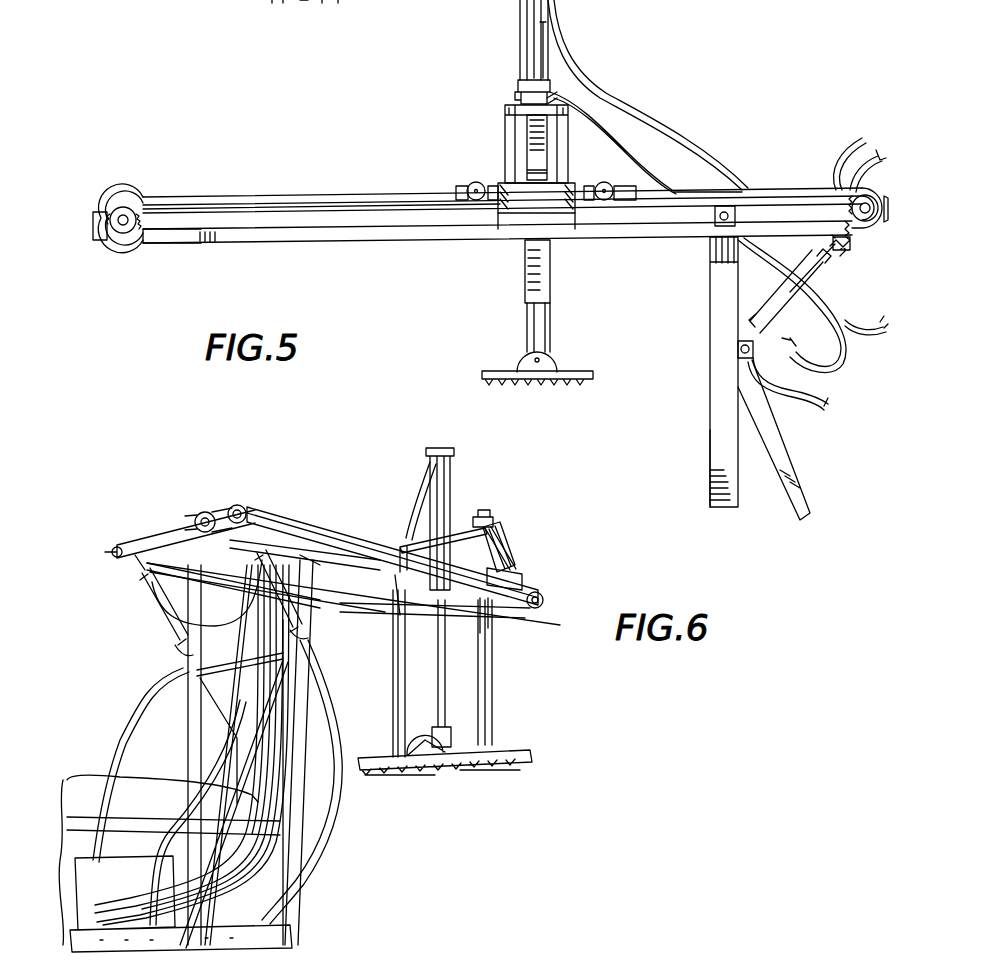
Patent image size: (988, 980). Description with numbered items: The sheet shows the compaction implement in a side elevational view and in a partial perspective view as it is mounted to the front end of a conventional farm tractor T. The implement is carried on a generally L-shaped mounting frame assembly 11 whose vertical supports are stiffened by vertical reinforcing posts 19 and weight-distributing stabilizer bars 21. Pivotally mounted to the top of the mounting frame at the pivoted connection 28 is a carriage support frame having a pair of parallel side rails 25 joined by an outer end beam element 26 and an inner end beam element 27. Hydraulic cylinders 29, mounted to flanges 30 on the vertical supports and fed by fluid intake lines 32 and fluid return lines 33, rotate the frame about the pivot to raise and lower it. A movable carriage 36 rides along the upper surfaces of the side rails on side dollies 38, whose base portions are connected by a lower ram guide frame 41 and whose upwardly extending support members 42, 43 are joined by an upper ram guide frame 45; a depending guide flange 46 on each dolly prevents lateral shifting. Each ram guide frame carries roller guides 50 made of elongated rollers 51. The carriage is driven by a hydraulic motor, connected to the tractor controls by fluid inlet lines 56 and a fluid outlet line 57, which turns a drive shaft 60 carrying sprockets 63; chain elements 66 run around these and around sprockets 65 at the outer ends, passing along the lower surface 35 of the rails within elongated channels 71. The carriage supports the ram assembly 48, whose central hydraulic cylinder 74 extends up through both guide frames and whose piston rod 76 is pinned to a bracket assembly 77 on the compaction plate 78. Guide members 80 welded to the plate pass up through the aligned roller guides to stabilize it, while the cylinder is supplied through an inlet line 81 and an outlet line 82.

In FIG. 5, the mounting frame assembly 11 is at (705, 465).
In FIG. 5, the vertical reinforcing posts 19 is at (720, 399).
In FIG. 5, the stabilizer bars 21 is at (801, 496).
In FIG. 5, the side rails 25 is at (208, 215).
In FIG. 6, the side rails 25 is at (322, 528).
In FIG. 6, the outer end beam element 26 is at (506, 614).
In FIG. 6, the inner end beam element 27 is at (201, 524).
In FIG. 5, the pivoted connection 28 is at (728, 211).
In FIG. 5, the hydraulic cylinders 29 is at (788, 294).
In FIG. 6, the hydraulic cylinders 29 is at (160, 598).
In FIG. 5, the flanges 30 is at (738, 351).
In FIG. 5, the fluid intake lines 32 is at (829, 400).
In FIG. 6, the fluid intake lines 32 is at (147, 696).
In FIG. 5, the fluid return lines 33 is at (846, 356).
In FIG. 6, the fluid return lines 33 is at (330, 724).
In FIG. 6, the lower surface 35 is at (356, 562).
In FIG. 5, the movable carriage 36 is at (500, 163).
In FIG. 6, the movable carriage 36 is at (510, 526).
In FIG. 5, the side dollies 38 is at (493, 200).
In FIG. 6, the side dollies 38 is at (523, 577).
In FIG. 6, the lower ram guide frame 41 is at (392, 610).
In FIG. 6, the support member 42 is at (470, 520).
In FIG. 6, the support member 43 is at (516, 555).
In FIG. 6, the upper ram guide frame 45 is at (417, 512).
In FIG. 5, the depending guide flange 46 is at (543, 200).
In FIG. 6, the depending guide flange 46 is at (542, 602).
In FIG. 5, the ram assembly 48 is at (510, 34).
In FIG. 5, the roller guides 50 is at (517, 85).
In FIG. 6, the roller guides 50 is at (490, 512).
In FIG. 5, the elongated rollers 51 is at (556, 88).
In FIG. 5, the fluid inlet lines 56 is at (838, 160).
In FIG. 6, the fluid inlet lines 56 is at (250, 840).
In FIG. 5, the fluid outlet line 57 is at (881, 170).
In FIG. 6, the fluid outlet line 57 is at (263, 875).
In FIG. 6, the drive shaft 60 is at (143, 545).
In FIG. 5, the sprockets 63 is at (890, 226).
In FIG. 5, the sprockets 65 is at (125, 238).
In FIG. 5, the chain elements 66 is at (152, 200).
In FIG. 5, the elongated channels 71 is at (175, 241).
In FIG. 5, the central hydraulic cylinder 74 is at (544, 24).
In FIG. 6, the central hydraulic cylinder 74 is at (430, 460).
In FIG. 5, the piston rod 76 is at (534, 329).
In FIG. 6, the piston rod 76 is at (442, 696).
In FIG. 5, the bracket assembly 77 is at (553, 365).
In FIG. 6, the bracket assembly 77 is at (430, 770).
In FIG. 5, the compaction plate 78 is at (582, 380).
In FIG. 6, the compaction plate 78 is at (475, 768).
In FIG. 5, the guide members 80 is at (545, 282).
In FIG. 6, the guide members 80 is at (393, 680).
In FIG. 5, the inlet line 81 is at (634, 152).
In FIG. 6, the inlet line 81 is at (210, 793).
In FIG. 5, the outlet line 82 is at (703, 148).
In FIG. 6, the outlet line 82 is at (250, 820).
In FIG. 6, the farm tractor T is at (97, 773).